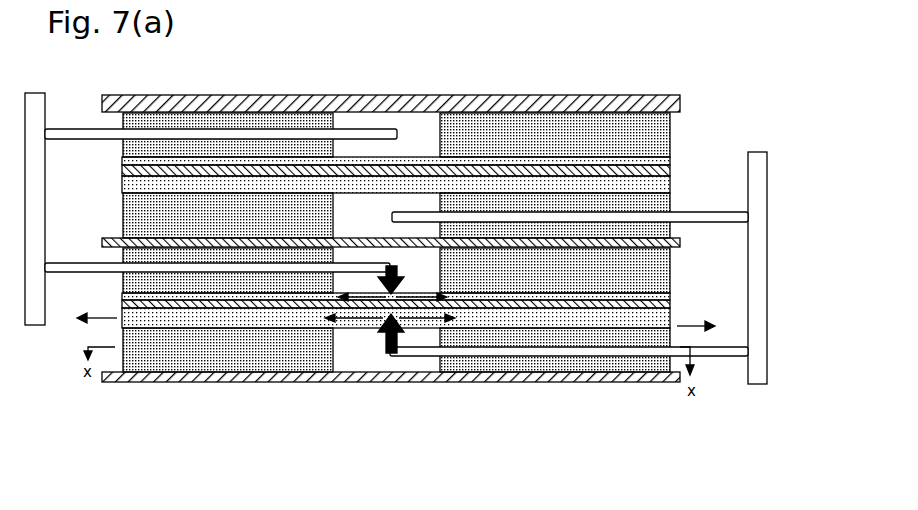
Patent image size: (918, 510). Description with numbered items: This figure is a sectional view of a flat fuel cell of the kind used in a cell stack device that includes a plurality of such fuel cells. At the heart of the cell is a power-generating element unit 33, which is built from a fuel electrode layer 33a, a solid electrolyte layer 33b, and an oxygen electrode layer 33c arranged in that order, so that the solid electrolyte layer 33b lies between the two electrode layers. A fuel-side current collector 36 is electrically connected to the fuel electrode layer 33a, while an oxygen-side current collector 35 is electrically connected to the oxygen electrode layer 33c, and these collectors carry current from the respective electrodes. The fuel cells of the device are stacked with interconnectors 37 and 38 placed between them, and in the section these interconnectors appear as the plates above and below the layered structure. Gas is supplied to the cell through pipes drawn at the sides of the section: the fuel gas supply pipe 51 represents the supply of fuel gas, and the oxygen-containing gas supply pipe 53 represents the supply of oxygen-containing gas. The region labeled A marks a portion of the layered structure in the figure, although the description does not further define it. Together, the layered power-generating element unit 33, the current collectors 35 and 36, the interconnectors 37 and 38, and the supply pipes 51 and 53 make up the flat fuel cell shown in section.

The power-generating element unit 33 is at (672, 157).
The fuel electrode layer 33a is at (671, 187).
The solid electrolyte layer 33b is at (672, 174).
The oxygen electrode layer 33c is at (133, 158).
The oxygen-side current collector 35 is at (622, 277).
The fuel-side current collector 36 is at (565, 362).
The interconnector 37 is at (123, 232).
The interconnector 38 is at (230, 382).
The fuel gas supply pipe 51 is at (735, 358).
The oxygen-containing gas supply pipe 53 is at (87, 272).
The region A is at (436, 133).